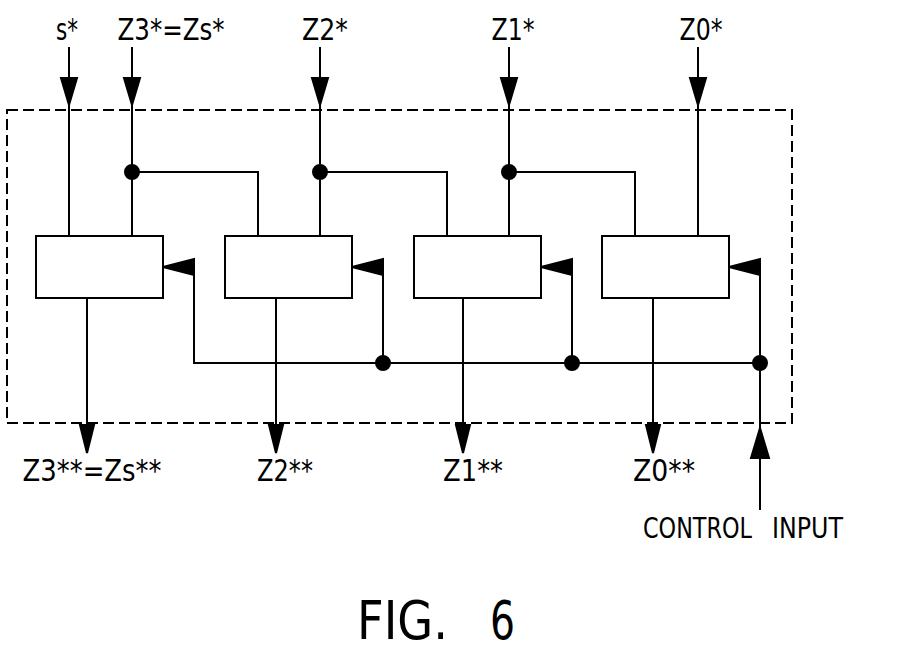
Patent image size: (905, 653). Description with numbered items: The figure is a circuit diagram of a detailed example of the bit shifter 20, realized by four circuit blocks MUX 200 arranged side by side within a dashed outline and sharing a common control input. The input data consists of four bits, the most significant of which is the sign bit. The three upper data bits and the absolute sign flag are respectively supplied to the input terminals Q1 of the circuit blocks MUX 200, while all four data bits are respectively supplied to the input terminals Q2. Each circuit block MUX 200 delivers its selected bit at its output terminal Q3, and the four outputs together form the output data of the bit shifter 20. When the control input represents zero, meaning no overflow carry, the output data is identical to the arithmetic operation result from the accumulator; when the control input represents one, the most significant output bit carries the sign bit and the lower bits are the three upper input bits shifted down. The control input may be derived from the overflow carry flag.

The bit shifter 20 is at (758, 112).
The circuit block MUX 200 is at (106, 291).
The input terminal Q1 is at (332, 141).
The input terminal Q2 is at (398, 141).
The output terminal Q3 is at (354, 375).